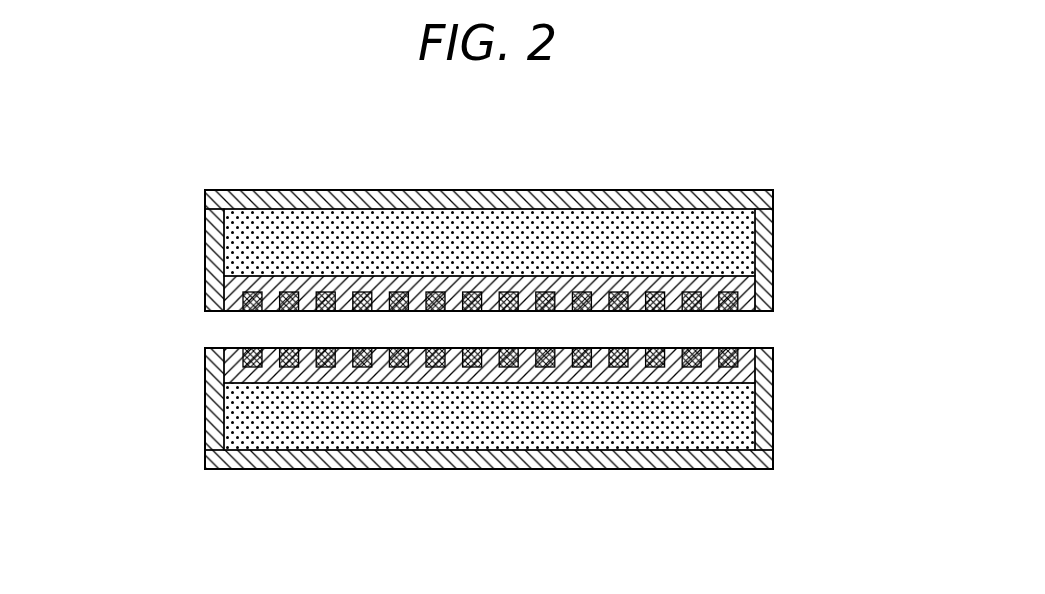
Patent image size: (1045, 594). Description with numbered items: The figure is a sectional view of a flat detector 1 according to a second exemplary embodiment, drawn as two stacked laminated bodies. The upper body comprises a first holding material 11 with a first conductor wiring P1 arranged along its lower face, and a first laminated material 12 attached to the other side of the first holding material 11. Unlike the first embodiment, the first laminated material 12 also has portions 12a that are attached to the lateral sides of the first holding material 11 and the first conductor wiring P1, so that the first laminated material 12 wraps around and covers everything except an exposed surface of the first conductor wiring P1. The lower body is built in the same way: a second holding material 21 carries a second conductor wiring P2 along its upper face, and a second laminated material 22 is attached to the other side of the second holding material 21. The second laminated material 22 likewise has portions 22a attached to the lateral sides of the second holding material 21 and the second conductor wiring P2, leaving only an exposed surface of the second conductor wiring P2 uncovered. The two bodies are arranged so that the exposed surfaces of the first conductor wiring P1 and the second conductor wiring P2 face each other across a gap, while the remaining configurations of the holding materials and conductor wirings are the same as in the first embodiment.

The flat detector 1 is at (190, 183).
The first holding material 11 is at (731, 242).
The first laminated material 12 is at (660, 199).
The portions of first laminated material 12a is at (214, 244).
The first conductor wiring P1 is at (742, 300).
The second holding material 21 is at (728, 427).
The second laminated material 22 is at (650, 470).
The portions of second laminated material 22a is at (214, 420).
The second conductor wiring P2 is at (757, 353).